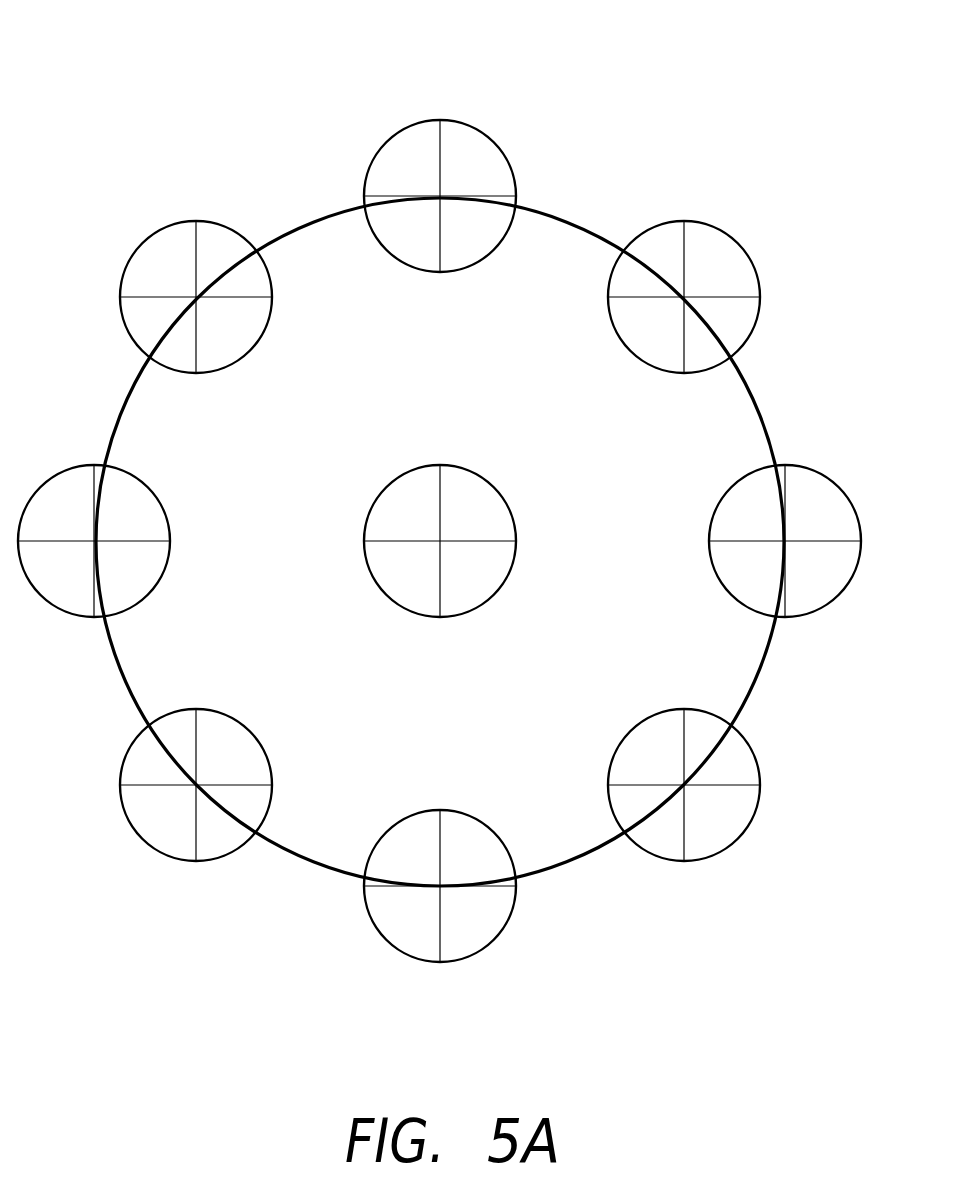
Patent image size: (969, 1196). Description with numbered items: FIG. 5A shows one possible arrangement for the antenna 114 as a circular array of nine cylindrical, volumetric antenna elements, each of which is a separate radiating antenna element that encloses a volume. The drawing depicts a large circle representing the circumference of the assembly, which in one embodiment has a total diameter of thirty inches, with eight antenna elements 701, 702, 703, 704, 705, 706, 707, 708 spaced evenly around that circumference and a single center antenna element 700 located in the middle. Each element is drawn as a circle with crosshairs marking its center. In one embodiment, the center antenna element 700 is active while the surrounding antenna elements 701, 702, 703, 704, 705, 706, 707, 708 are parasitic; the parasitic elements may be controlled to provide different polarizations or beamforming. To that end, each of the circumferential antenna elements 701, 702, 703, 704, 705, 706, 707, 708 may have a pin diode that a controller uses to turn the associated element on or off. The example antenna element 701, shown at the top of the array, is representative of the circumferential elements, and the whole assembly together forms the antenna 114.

The antenna 114 is at (647, 125).
The center antenna element 700 is at (495, 487).
The antenna element 701 is at (485, 132).
The antenna element 702 is at (742, 245).
The antenna element 703 is at (803, 465).
The antenna element 704 is at (753, 753).
The antenna element 705 is at (473, 818).
The antenna element 706 is at (248, 728).
The antenna element 707 is at (152, 490).
The antenna element 708 is at (213, 223).